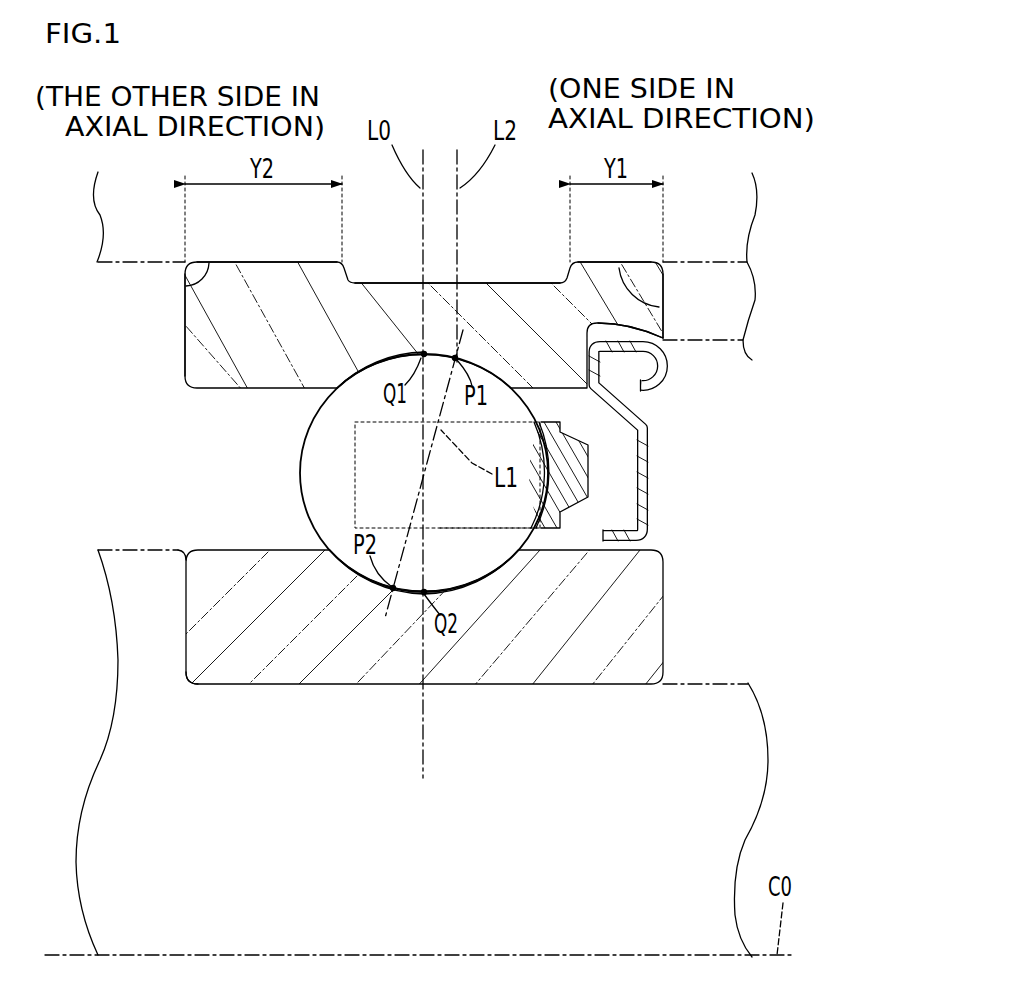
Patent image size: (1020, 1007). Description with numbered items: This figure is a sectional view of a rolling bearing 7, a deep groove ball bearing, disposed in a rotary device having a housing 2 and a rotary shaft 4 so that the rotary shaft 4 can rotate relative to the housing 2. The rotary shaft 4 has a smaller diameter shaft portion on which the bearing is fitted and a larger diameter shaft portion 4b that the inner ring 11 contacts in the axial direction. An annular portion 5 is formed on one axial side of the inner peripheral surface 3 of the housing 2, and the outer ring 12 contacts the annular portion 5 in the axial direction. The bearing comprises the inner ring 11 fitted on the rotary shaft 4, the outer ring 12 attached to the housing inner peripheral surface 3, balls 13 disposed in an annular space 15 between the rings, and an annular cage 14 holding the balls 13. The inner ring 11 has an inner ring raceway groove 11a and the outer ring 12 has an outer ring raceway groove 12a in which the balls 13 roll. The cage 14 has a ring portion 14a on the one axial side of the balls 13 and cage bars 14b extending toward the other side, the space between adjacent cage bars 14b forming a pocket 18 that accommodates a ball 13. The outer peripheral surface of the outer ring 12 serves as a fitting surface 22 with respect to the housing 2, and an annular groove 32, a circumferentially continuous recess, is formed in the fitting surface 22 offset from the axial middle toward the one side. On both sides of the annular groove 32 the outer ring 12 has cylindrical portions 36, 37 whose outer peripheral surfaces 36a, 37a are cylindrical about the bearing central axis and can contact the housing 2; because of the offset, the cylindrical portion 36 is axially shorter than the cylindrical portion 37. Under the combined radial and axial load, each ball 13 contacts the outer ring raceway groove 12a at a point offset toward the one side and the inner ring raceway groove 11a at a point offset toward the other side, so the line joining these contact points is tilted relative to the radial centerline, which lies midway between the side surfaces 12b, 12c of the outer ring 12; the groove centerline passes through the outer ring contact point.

The housing 2 is at (145, 250).
The inner peripheral surface of the housing 3 is at (112, 270).
The rotary shaft 4 is at (708, 684).
The larger diameter shaft portion 4b is at (125, 548).
The annular portion 5 is at (745, 289).
The rolling bearing 7 is at (199, 687).
The inner ring 11 is at (616, 628).
The inner ring raceway groove 11a is at (405, 595).
The outer ring 12 is at (665, 338).
The outer ring raceway groove 12a is at (398, 355).
The side surface on the one side of the outer ring 12b is at (663, 292).
The side surface on the other side of the outer ring 12c is at (185, 348).
The ball 13 is at (472, 558).
The cage 14 is at (593, 454).
The ring portion 14a is at (575, 495).
The cage bar 14b is at (447, 534).
The annular space 15 is at (250, 478).
The pocket 18 is at (353, 438).
The fitting surface 22 is at (627, 261).
The annular groove 32 is at (503, 280).
The cylindrical portion on the one side 36 is at (663, 322).
The outer peripheral surface of the cylindrical portion on the one side 36a is at (600, 262).
The cylindrical portion on the other side 37 is at (205, 275).
The outer peripheral surface of the cylindrical portion on the other side 37a is at (270, 262).